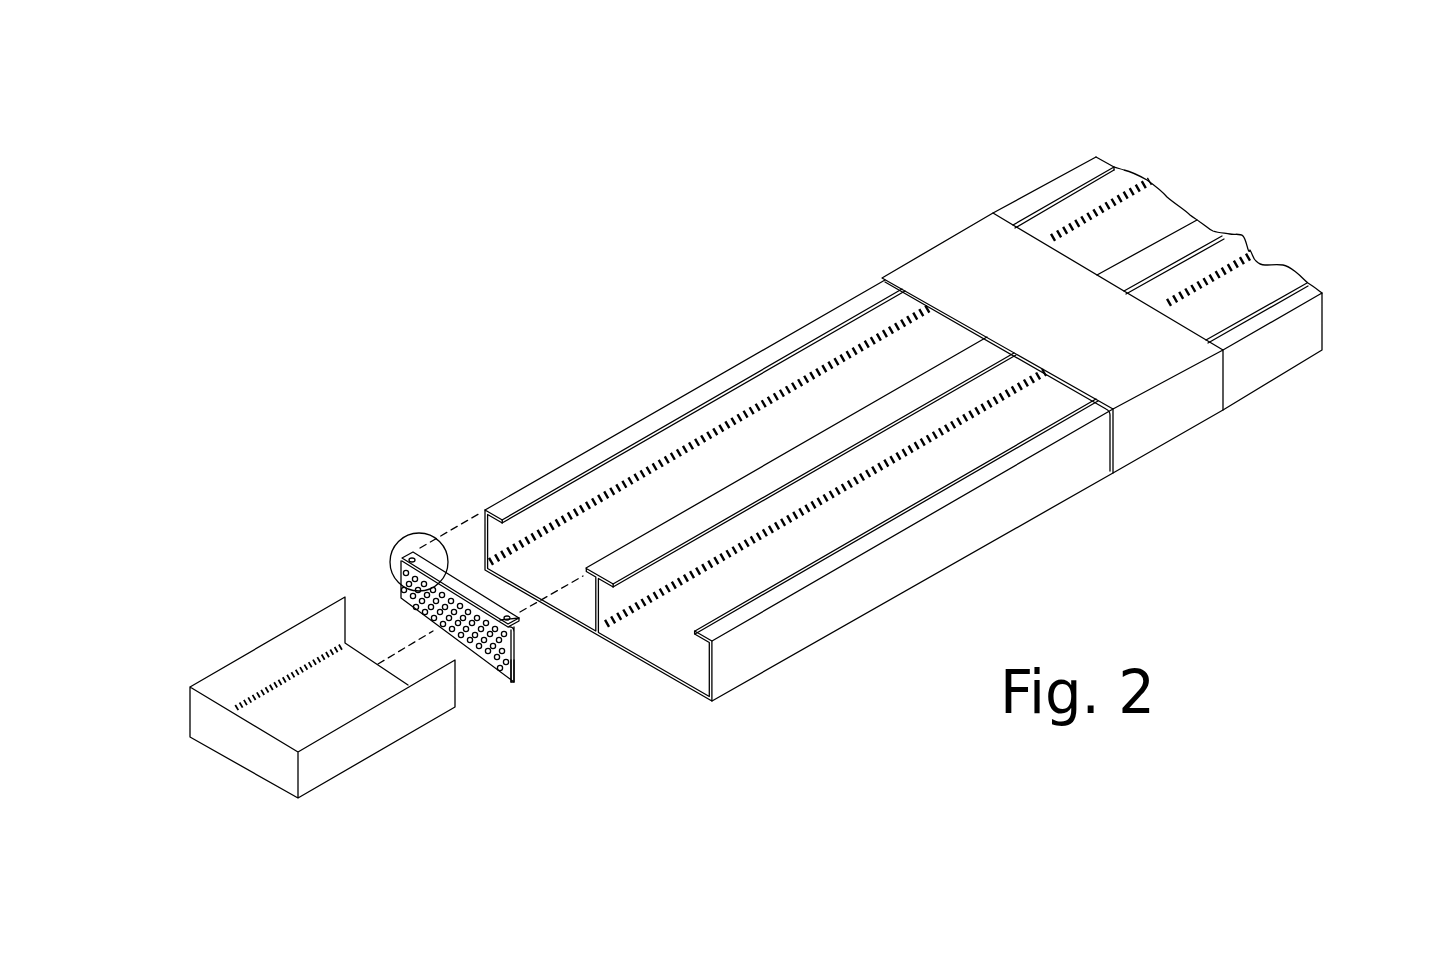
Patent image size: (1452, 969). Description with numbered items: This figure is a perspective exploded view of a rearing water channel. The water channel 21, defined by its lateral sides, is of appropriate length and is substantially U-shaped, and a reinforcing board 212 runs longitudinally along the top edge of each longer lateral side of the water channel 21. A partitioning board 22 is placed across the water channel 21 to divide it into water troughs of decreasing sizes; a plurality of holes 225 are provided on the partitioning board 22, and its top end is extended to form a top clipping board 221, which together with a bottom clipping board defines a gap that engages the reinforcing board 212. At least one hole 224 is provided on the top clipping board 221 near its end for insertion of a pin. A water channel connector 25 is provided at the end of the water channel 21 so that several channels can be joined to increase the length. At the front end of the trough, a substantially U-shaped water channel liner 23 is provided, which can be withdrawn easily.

The water channel 21 is at (1075, 167).
The reinforcing board 212 is at (1253, 323).
The water channel connector 25 is at (985, 260).
The partitioning board 22 is at (451, 611).
The top clipping board 221 is at (436, 560).
The hole 224 is at (522, 620).
The holes 225 is at (500, 680).
The water channel liner 23 is at (292, 705).